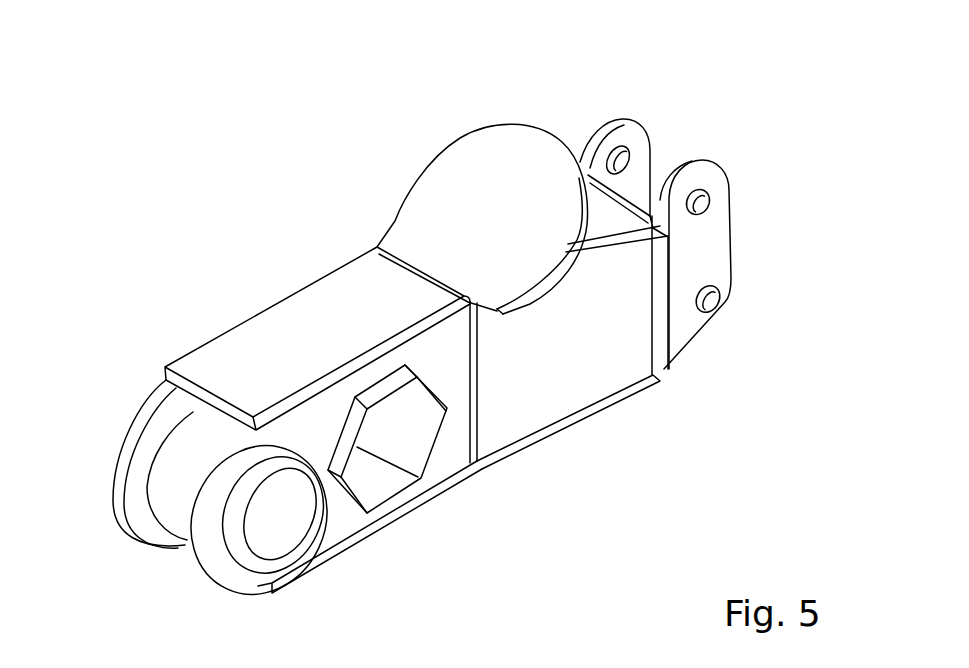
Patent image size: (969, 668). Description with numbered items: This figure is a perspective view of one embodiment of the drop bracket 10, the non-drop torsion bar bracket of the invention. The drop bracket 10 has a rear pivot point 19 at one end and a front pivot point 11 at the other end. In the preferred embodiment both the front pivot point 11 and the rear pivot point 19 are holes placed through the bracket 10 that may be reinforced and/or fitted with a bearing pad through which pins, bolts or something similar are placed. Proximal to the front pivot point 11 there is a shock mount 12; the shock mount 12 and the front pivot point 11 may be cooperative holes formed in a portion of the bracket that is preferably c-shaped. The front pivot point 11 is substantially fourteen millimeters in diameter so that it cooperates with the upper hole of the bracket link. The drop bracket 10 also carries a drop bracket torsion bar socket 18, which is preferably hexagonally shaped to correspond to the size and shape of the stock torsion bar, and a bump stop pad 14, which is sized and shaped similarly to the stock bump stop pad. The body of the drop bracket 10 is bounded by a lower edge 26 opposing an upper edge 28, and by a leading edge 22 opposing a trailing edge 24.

The drop bracket 10 is at (283, 210).
The front pivot point 11 is at (717, 297).
The shock mount 12 is at (707, 190).
The bump stop pad 14 is at (490, 142).
The drop bracket torsion bar socket 18 is at (390, 438).
The rear pivot point 19 is at (280, 512).
The leading edge 22 is at (732, 254).
The trailing edge 24 is at (200, 498).
The lower edge 26 is at (570, 423).
The upper edge 28 is at (283, 340).